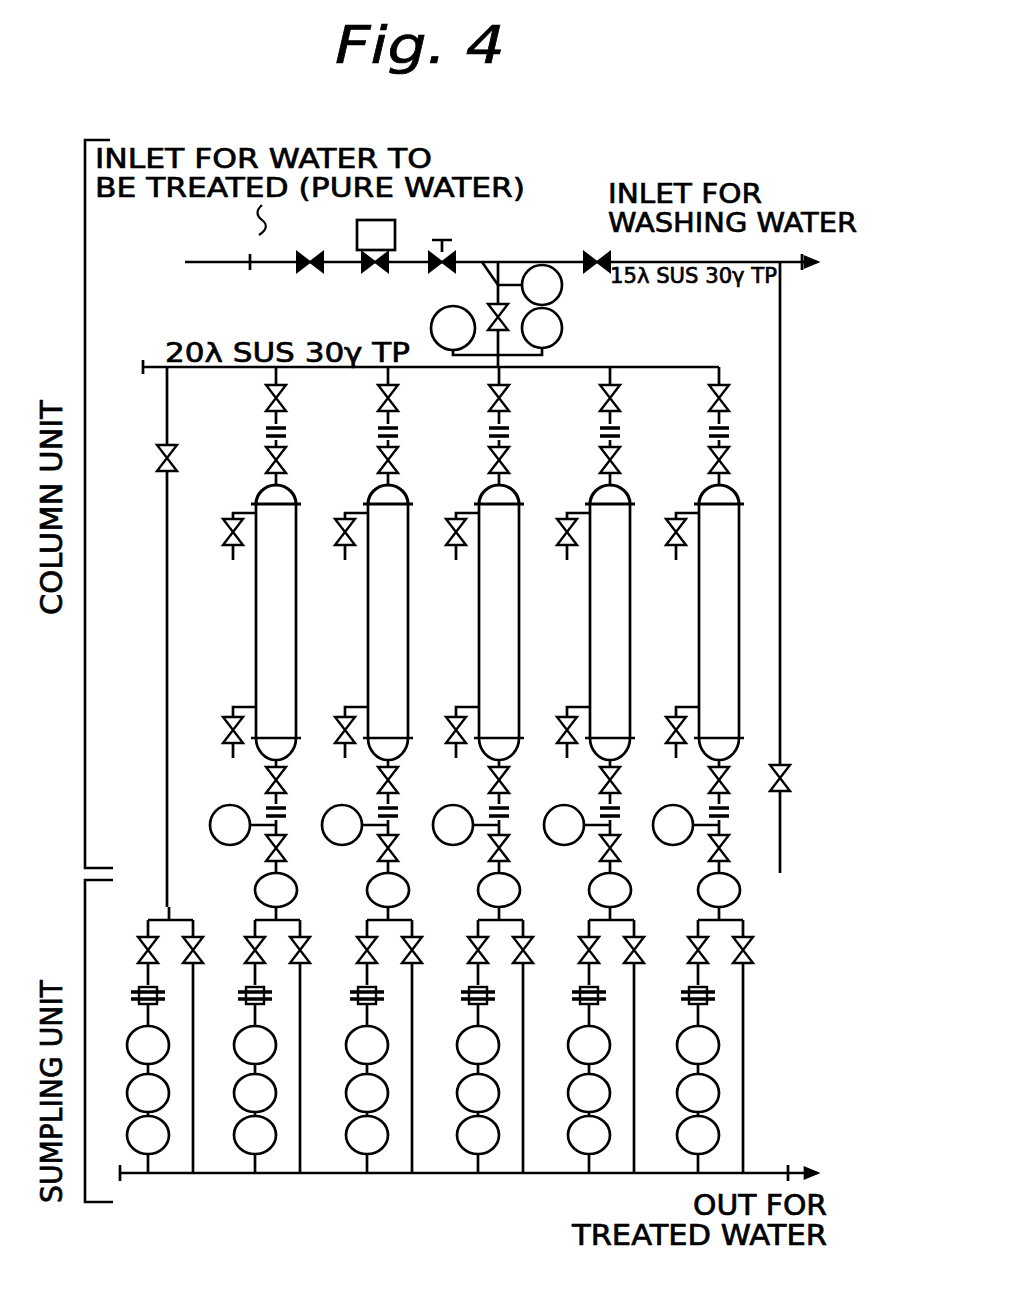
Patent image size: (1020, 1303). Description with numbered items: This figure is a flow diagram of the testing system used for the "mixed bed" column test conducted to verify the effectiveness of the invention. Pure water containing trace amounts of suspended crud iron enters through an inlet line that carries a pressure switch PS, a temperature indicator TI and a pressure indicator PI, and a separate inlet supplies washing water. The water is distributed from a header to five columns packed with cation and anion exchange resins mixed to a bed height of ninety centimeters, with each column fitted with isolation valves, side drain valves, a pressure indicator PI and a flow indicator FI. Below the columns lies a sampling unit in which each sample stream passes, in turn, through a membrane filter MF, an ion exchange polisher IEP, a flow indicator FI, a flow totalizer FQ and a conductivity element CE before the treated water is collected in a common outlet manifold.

The pressure switch PS is at (542, 285).
The temperature indicator TI is at (542, 328).
The pressure indicator PI is at (451, 575).
The flow indicator FI is at (433, 968).
The flow totalizer FQ is at (423, 1093).
The conductivity element CE is at (423, 1135).
The membrane filter MF is at (429, 984).
The ion exchange polisher IEP is at (441, 1021).